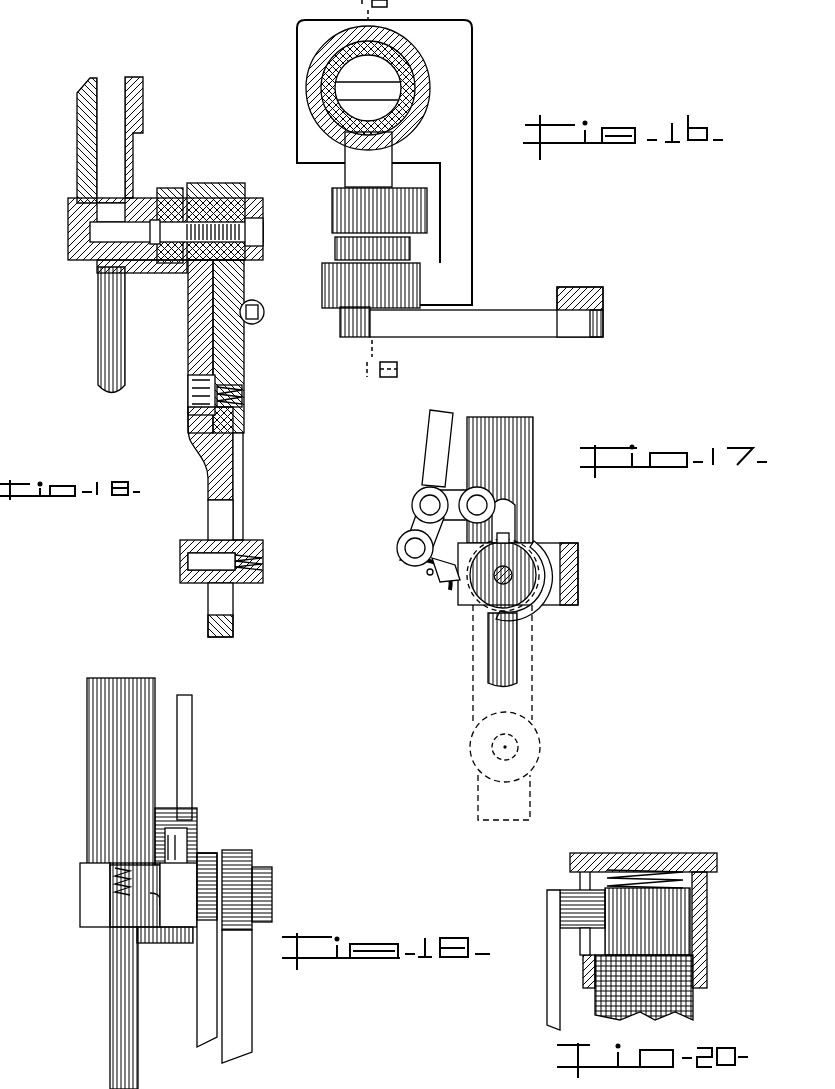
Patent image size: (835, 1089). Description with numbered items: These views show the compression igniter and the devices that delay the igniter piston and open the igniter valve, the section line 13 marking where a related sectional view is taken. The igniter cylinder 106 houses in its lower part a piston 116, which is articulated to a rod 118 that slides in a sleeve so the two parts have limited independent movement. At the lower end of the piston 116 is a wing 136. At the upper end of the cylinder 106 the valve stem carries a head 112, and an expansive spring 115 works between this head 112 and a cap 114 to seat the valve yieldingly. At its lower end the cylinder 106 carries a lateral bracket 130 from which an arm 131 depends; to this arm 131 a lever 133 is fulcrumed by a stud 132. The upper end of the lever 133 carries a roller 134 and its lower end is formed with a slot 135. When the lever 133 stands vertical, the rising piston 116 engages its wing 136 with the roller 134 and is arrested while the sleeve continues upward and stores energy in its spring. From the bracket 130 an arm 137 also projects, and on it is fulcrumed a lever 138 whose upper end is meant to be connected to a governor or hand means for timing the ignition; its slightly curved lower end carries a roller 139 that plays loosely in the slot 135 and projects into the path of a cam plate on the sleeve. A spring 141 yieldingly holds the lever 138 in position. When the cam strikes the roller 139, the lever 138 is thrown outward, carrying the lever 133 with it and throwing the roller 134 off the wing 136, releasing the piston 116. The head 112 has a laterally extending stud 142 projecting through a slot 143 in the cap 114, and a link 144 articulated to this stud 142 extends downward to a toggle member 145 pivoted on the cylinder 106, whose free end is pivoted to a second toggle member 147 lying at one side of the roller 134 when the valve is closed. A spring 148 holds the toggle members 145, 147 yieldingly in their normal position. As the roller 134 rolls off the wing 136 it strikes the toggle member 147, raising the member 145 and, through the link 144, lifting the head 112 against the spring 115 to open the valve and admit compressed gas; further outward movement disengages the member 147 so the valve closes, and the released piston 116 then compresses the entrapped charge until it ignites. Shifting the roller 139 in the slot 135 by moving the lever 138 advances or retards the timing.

In FIG. 18, the base block 13 is at (263, 253).
In FIG. 18, the igniter cylinder 106 is at (80, 142).
In FIG. 16, the igniter cylinder 106 is at (418, 90).
In FIG. 17, the igniter cylinder 106 is at (515, 432).
In FIG. 19, the igniter cylinder 106 is at (90, 748).
In FIG. 20, the igniter cylinder 106 is at (693, 1002).
In FIG. 20, the head 112 is at (690, 913).
In FIG. 20, the cap 114 is at (707, 886).
In FIG. 20, the expansive spring 115 is at (650, 868).
In FIG. 18, the piston 116 is at (100, 166).
In FIG. 16, the piston 116 is at (413, 48).
In FIG. 17, the rod 118 is at (505, 668).
In FIG. 19, the rod 118 is at (128, 980).
In FIG. 18, the lateral bracket 130 is at (222, 183).
In FIG. 16, the lateral bracket 130 is at (462, 207).
In FIG. 17, the lateral bracket 130 is at (578, 580).
In FIG. 19, the lateral bracket 130 is at (238, 872).
In FIG. 18, the arm 131 is at (230, 357).
In FIG. 17, the arm 131 is at (540, 740).
In FIG. 19, the arm 131 is at (240, 1012).
In FIG. 18, the stud 132 is at (195, 400).
In FIG. 18, the lever 133 is at (200, 455).
In FIG. 16, the lever 133 is at (400, 250).
In FIG. 17, the lever 133 is at (530, 805).
In FIG. 19, the lever 133 is at (205, 1012).
In FIG. 18, the roller 134 is at (165, 198).
In FIG. 17, the roller 134 is at (520, 558).
In FIG. 18, the slot 135 is at (225, 605).
In FIG. 18, the wing 136 is at (162, 270).
In FIG. 16, the wing 136 is at (430, 192).
In FIG. 17, the wing 136 is at (540, 605).
In FIG. 16, the arm 137 is at (487, 330).
In FIG. 19, the arm 137 is at (262, 890).
In FIG. 18, the lever 138 is at (244, 447).
In FIG. 16, the lever 138 is at (603, 305).
In FIG. 18, the roller 139 is at (190, 583).
In FIG. 18, the spring 141 is at (264, 312).
In FIG. 20, the stud 142 is at (590, 905).
In FIG. 20, the slot 143 is at (582, 950).
In FIG. 17, the link 144 is at (428, 450).
In FIG. 19, the link 144 is at (185, 752).
In FIG. 20, the link 144 is at (556, 1012).
In FIG. 17, the toggle member 145 is at (418, 525).
In FIG. 19, the toggle member 145 is at (170, 850).
In FIG. 17, the second toggle member 147 is at (447, 575).
In FIG. 19, the second toggle member 147 is at (195, 855).
In FIG. 17, the spring 148 is at (428, 575).
In FIG. 19, the spring 148 is at (115, 918).